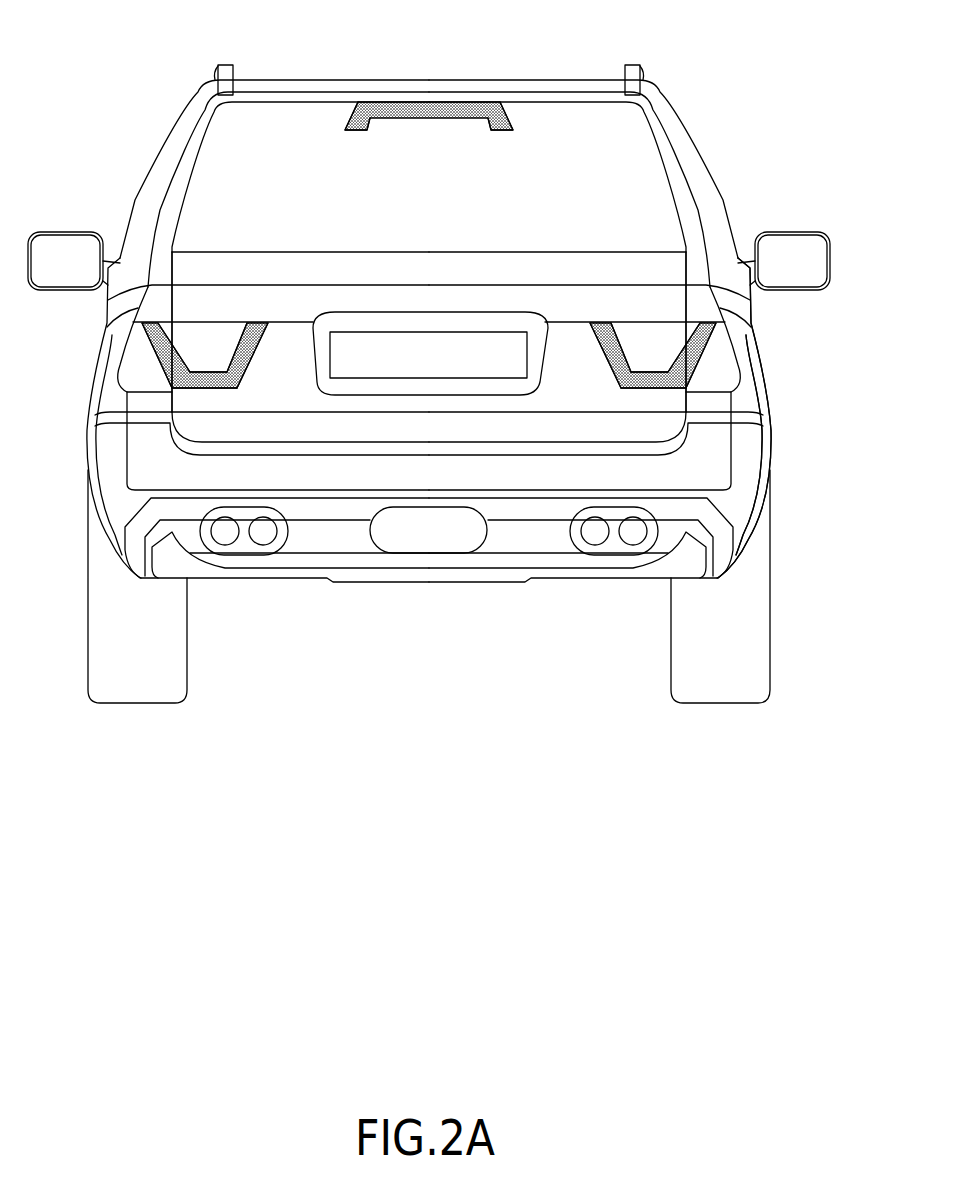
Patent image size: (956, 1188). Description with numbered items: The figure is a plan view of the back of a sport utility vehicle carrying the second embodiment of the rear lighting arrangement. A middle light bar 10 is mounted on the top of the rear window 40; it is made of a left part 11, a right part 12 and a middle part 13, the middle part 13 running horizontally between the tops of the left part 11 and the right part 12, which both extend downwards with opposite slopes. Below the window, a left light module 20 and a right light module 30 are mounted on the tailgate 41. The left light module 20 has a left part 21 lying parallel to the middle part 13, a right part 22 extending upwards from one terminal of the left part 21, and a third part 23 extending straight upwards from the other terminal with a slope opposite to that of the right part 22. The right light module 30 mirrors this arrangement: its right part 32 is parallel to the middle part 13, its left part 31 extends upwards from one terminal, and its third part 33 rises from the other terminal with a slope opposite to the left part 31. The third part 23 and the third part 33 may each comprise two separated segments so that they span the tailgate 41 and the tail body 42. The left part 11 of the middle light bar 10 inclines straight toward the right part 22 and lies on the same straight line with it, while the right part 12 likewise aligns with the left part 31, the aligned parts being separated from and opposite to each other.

The middle light bar 10 is at (402, 137).
The left part of the middle light bar 11 is at (346, 131).
The right part of the middle light bar 12 is at (507, 131).
The middle part of the middle light bar 13 is at (426, 116).
The left light module 20 is at (210, 473).
The left part of the left light module 21 is at (190, 383).
The right part of the left light module 22 is at (253, 347).
The third part of the left light module 23 is at (153, 335).
The right light module 30 is at (649, 473).
The left part of the right light module 31 is at (593, 333).
The right part of the right light module 32 is at (653, 390).
The third part of the right light module 33 is at (688, 360).
The rear window 40 is at (434, 363).
The tailgate 41 is at (652, 338).
The tail body 42 is at (725, 366).